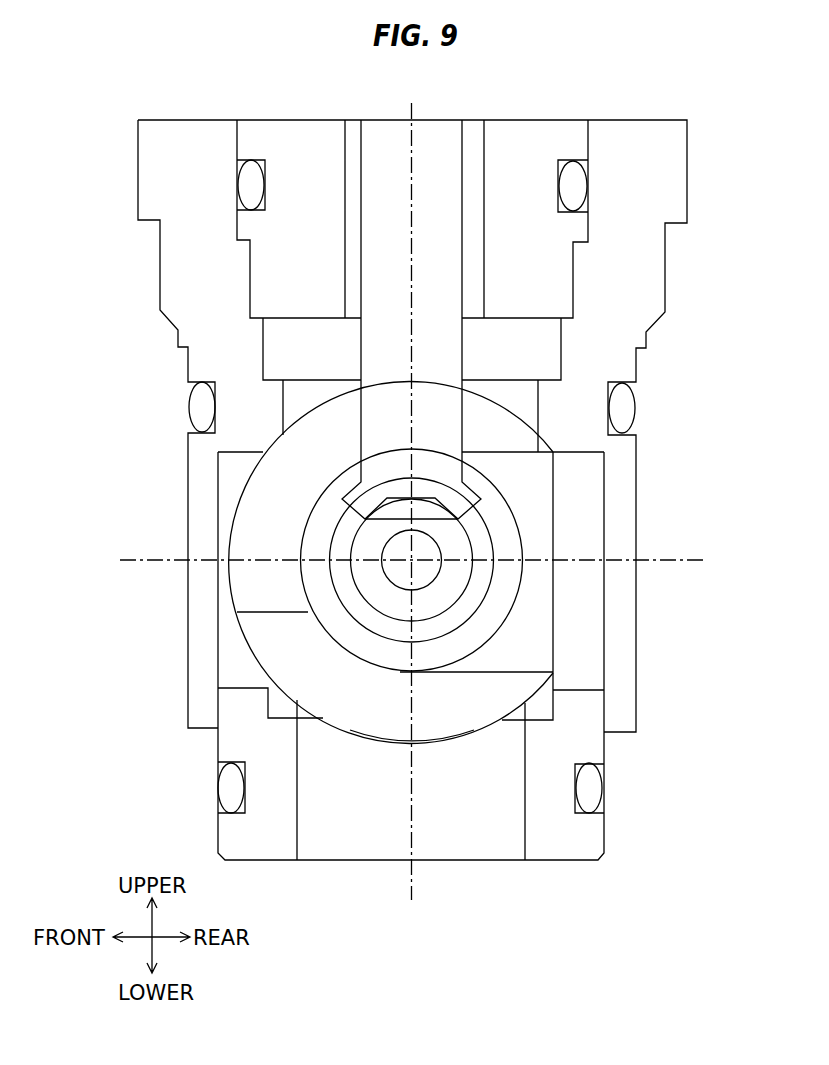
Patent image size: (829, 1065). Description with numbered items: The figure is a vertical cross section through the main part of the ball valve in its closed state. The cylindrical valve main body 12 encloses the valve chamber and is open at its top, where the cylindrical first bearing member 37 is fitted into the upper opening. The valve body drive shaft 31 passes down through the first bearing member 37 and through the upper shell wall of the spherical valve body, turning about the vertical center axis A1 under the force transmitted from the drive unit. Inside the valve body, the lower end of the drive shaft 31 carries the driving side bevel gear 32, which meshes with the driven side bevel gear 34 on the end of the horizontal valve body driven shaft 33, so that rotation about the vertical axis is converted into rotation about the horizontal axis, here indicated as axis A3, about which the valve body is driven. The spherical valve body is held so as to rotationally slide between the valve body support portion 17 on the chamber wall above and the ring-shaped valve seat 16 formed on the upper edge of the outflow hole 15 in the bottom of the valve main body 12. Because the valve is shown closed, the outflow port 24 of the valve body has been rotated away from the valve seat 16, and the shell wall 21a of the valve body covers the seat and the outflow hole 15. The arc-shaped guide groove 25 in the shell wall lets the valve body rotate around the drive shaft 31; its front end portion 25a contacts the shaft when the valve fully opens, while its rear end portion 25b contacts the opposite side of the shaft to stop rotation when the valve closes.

The valve main body 12 is at (650, 270).
The first bearing member 37 is at (258, 143).
The valve body drive shaft 31 is at (358, 259).
The valve body support portion 17 is at (283, 437).
The guide groove 25 is at (260, 493).
The front end portion 25a is at (270, 610).
The rear end portion 25b is at (463, 423).
The driving side bevel gear 32 is at (463, 517).
The driven side bevel gear 34 is at (483, 545).
The valve body driven shaft 33 is at (445, 592).
The outflow port 24 is at (553, 648).
The valve seat 16 is at (286, 690).
The outflow hole 15 is at (522, 800).
The shell wall 21a is at (355, 735).
The center axis A1 is at (413, 115).
The axis A3 is at (683, 562).